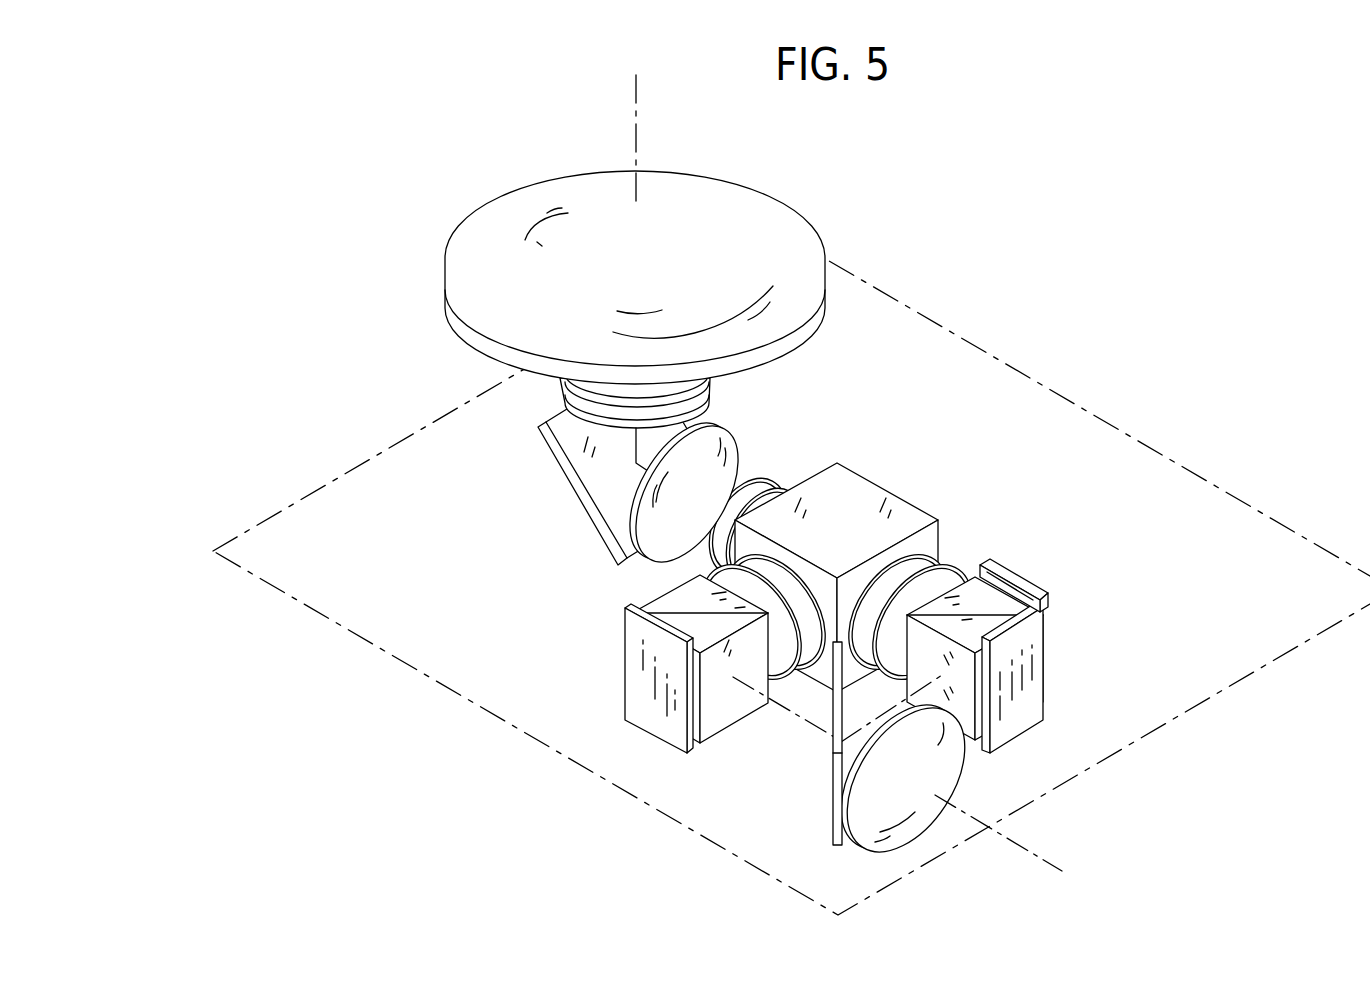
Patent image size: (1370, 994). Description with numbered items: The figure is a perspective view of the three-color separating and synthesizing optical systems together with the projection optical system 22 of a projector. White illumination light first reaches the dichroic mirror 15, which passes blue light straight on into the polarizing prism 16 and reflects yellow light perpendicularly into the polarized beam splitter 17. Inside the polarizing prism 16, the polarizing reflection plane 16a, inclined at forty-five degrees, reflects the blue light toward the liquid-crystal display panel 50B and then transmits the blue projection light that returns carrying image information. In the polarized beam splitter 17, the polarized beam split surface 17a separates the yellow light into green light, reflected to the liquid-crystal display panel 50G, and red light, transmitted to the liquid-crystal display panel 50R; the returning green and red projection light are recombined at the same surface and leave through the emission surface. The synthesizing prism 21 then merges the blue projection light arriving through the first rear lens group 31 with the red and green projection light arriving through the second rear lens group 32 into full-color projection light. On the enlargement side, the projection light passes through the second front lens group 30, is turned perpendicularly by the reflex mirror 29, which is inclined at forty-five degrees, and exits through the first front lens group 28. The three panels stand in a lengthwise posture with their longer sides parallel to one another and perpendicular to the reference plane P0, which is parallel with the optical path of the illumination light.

The dichroic mirror 15 is at (833, 805).
The polarizing prism 16 is at (664, 697).
The polarizing reflection plane 16a is at (650, 606).
The polarized beam splitter 17 is at (1008, 608).
The polarized beam split surface 17a is at (982, 613).
The synthesizing prism 21 is at (863, 473).
The projection optical system 22 is at (843, 543).
The first front lens group 28 is at (430, 385).
The reflex mirror 29 is at (576, 490).
The second front lens group 30 is at (723, 417).
The first rear lens group 31 is at (796, 704).
The second rear lens group 32 is at (943, 558).
The liquid-crystal display panel 50B is at (633, 663).
The liquid-crystal display panel 50G is at (1022, 723).
The liquid-crystal display panel 50R is at (1031, 586).
The reference plane P0 is at (1217, 525).